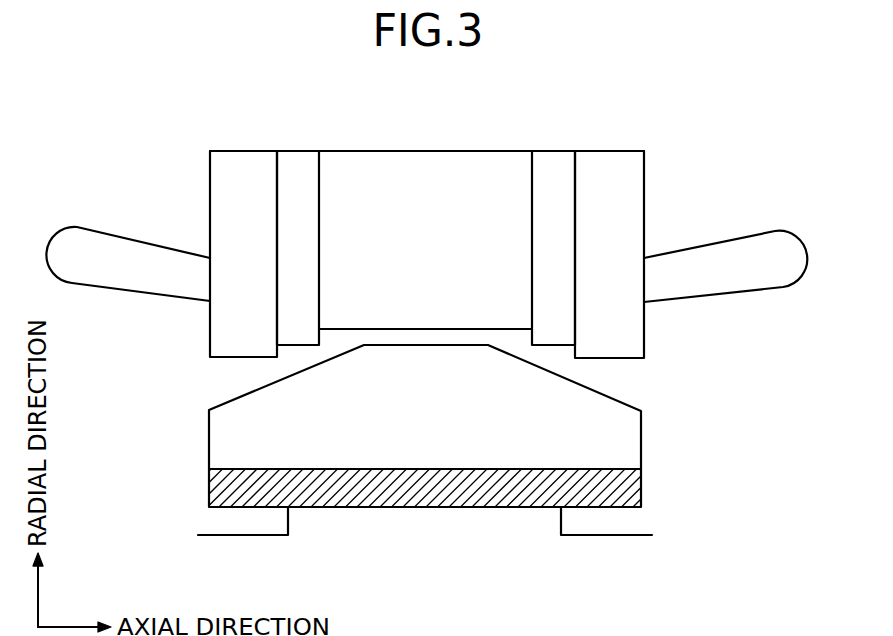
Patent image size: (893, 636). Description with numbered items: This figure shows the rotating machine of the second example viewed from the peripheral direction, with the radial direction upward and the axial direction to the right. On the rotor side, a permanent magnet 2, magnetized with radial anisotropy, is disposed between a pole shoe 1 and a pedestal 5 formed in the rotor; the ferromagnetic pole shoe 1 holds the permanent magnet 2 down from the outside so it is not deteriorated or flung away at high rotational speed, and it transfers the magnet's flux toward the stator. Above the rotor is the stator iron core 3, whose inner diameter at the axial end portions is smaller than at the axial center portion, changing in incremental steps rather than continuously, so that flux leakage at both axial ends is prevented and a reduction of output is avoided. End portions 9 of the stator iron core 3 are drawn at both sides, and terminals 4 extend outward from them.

The pole shoe 1 is at (631, 438).
The permanent magnet 2 is at (633, 486).
The stator iron core 3 is at (429, 163).
The terminals 4 is at (709, 257).
The pedestal 5 is at (423, 518).
The flanges 9 is at (243, 163).